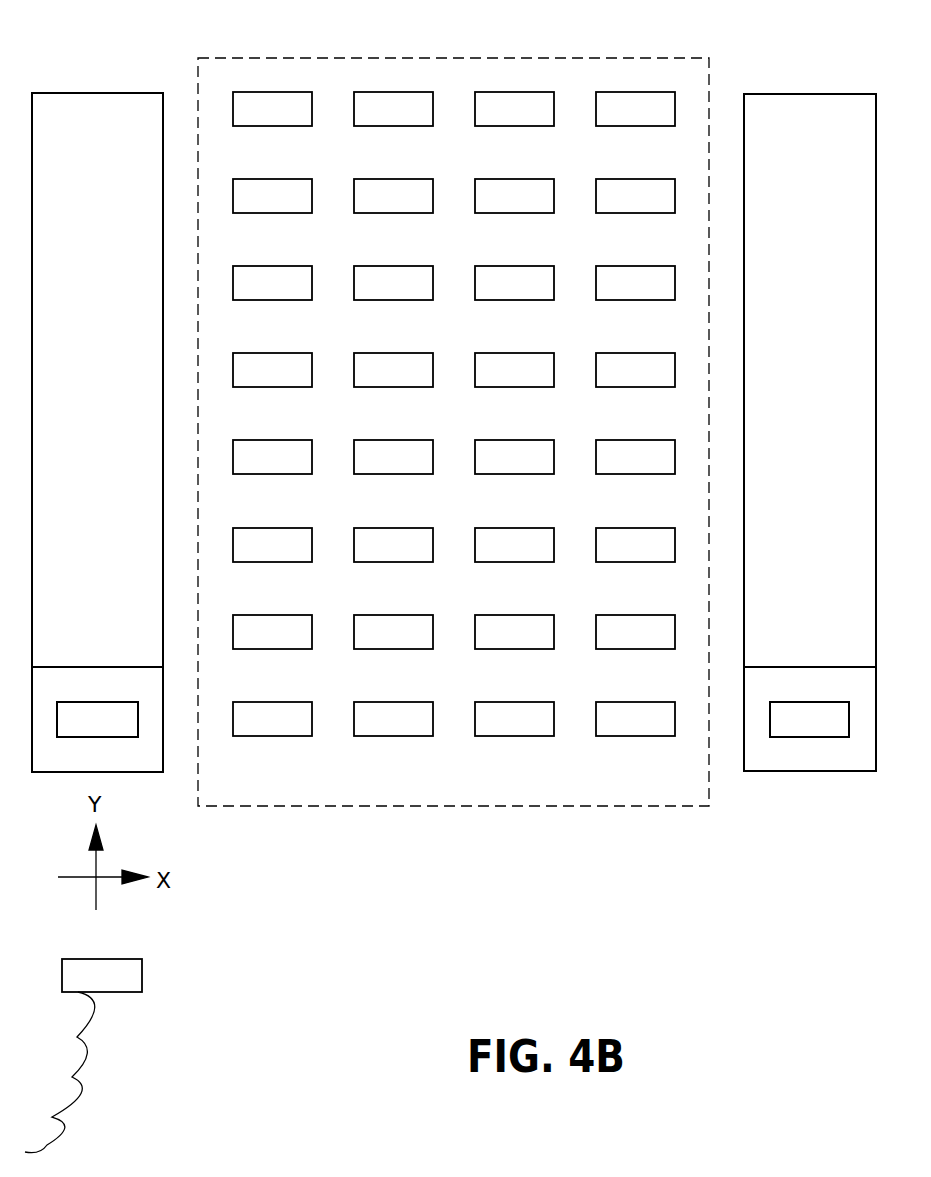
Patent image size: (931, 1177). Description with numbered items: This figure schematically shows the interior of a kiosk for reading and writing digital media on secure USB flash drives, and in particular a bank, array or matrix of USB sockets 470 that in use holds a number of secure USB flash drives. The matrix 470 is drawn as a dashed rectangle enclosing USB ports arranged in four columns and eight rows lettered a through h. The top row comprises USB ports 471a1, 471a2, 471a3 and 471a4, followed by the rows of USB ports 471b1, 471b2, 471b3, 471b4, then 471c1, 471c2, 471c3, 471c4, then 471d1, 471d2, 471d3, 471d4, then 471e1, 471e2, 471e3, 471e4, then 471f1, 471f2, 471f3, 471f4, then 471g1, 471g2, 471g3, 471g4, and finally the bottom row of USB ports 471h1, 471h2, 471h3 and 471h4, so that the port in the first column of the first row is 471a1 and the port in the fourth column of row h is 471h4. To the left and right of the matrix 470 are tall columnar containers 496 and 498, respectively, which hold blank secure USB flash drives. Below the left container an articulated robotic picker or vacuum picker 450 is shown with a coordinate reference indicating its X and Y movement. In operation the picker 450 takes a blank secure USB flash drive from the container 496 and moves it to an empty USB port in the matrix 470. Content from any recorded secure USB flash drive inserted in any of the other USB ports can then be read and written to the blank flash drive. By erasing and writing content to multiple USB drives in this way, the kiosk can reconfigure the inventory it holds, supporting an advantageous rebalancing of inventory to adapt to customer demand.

The matrix of USB ports 470 is at (342, 58).
The columnar container 496 is at (85, 93).
The columnar container 498 is at (810, 94).
The articulated robotic picker or vacuum picker 450 is at (142, 970).
The USB port 471a1 is at (297, 126).
The USB port 471a2 is at (418, 126).
The USB port 471a3 is at (546, 126).
The USB port 471a4 is at (660, 126).
The USB port 471b1 is at (297, 213).
The USB port 471b2 is at (418, 213).
The USB port 471b3 is at (546, 213).
The USB port 471b4 is at (660, 213).
The USB port 471c1 is at (297, 300).
The USB port 471c2 is at (418, 300).
The USB port 471c3 is at (546, 300).
The USB port 471c4 is at (660, 300).
The USB port 471d1 is at (297, 387).
The USB port 471d2 is at (418, 387).
The USB port 471d3 is at (546, 387).
The USB port 471d4 is at (660, 387).
The USB port 471e1 is at (297, 474).
The USB port 471e2 is at (418, 474).
The USB port 471e3 is at (546, 474).
The USB port 471e4 is at (660, 474).
The USB port 471f1 is at (297, 562).
The USB port 471f2 is at (418, 562).
The USB port 471f3 is at (546, 562).
The USB port 471f4 is at (660, 562).
The USB port 471g1 is at (297, 649).
The USB port 471g2 is at (418, 649).
The USB port 471g3 is at (546, 649).
The USB port 471g4 is at (660, 649).
The USB port 471h1 is at (297, 736).
The USB port 471h2 is at (418, 736).
The USB port 471h3 is at (546, 736).
The USB port 471h4 is at (660, 736).